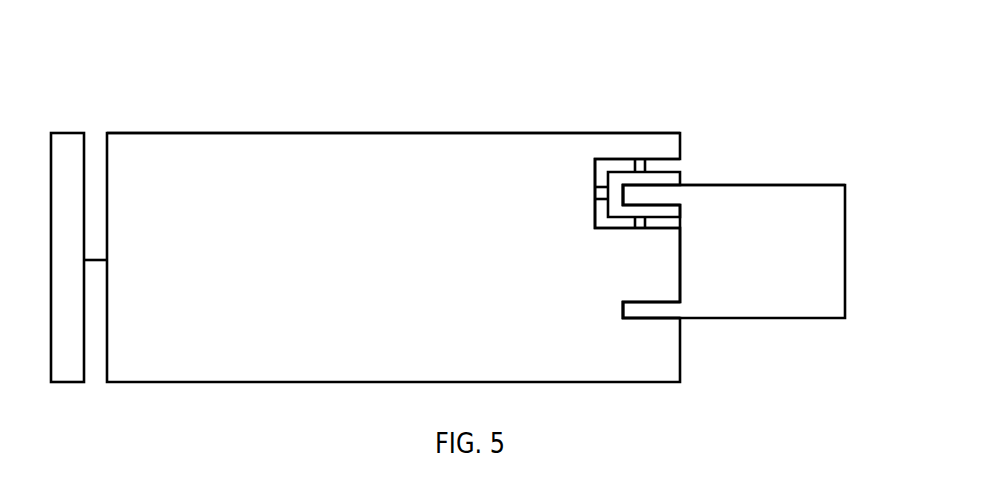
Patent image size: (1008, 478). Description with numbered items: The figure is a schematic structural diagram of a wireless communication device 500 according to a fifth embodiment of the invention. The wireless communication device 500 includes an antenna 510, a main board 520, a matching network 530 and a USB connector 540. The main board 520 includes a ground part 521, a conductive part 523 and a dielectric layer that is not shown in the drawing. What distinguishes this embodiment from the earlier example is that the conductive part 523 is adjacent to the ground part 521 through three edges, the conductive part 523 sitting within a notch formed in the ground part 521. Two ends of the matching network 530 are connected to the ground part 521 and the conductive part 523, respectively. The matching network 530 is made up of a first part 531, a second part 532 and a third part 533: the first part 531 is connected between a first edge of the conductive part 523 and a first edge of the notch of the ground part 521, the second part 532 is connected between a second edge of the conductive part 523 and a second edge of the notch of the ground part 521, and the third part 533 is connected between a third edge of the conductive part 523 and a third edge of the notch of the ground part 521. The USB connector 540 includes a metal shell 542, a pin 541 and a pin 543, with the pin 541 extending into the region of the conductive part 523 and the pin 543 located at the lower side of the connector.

The wireless communication device 500 is at (402, 30).
The antenna 510 is at (142, 226).
The main board 520 is at (393, 213).
The ground part 521 is at (265, 133).
The conductive part 523 is at (660, 181).
The matching network 530 is at (536, 231).
The first part 531 is at (574, 181).
The second part 532 is at (594, 205).
The third part 533 is at (576, 254).
The USB connector 540 is at (752, 204).
The pin 541 is at (705, 174).
The metal shell 542 is at (777, 164).
The pin 543 is at (723, 344).